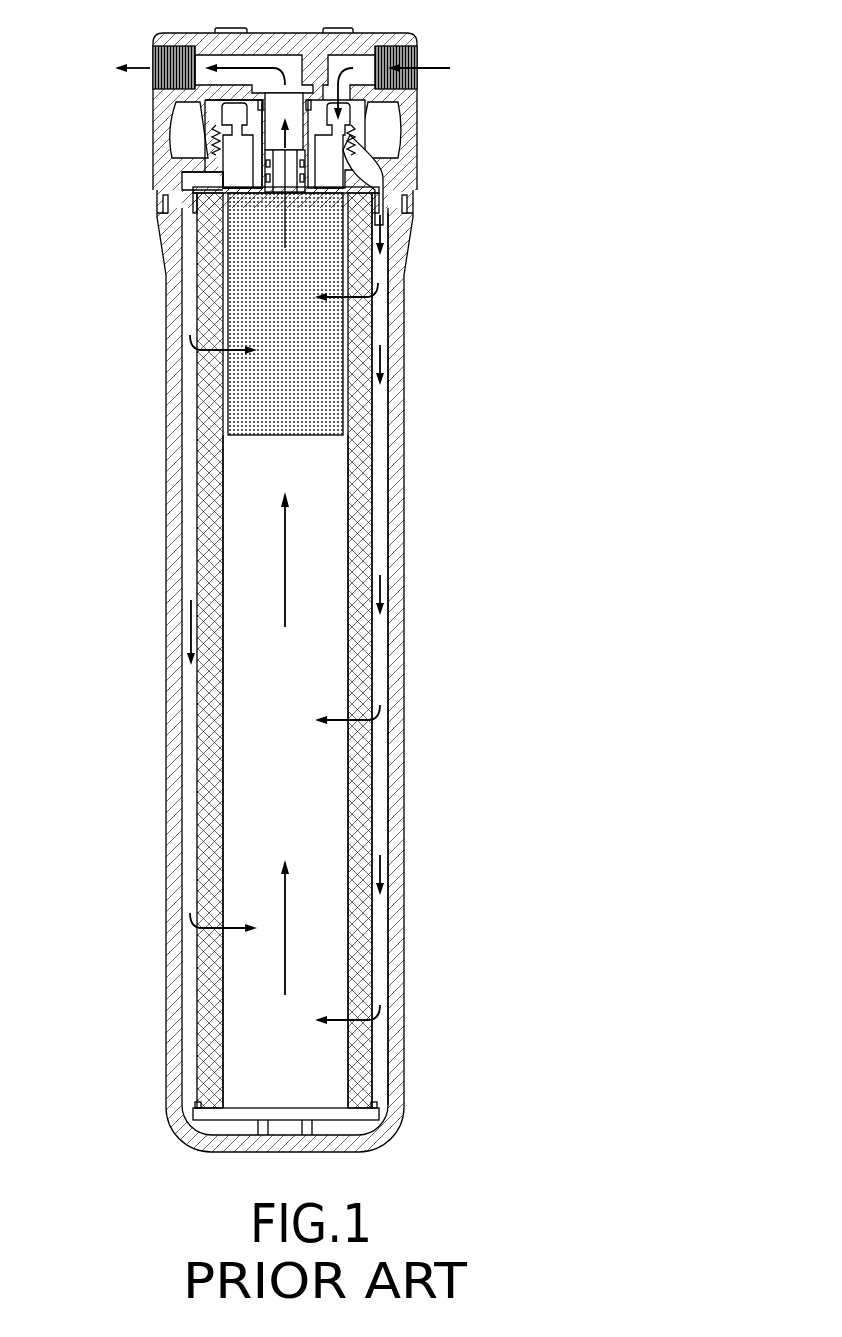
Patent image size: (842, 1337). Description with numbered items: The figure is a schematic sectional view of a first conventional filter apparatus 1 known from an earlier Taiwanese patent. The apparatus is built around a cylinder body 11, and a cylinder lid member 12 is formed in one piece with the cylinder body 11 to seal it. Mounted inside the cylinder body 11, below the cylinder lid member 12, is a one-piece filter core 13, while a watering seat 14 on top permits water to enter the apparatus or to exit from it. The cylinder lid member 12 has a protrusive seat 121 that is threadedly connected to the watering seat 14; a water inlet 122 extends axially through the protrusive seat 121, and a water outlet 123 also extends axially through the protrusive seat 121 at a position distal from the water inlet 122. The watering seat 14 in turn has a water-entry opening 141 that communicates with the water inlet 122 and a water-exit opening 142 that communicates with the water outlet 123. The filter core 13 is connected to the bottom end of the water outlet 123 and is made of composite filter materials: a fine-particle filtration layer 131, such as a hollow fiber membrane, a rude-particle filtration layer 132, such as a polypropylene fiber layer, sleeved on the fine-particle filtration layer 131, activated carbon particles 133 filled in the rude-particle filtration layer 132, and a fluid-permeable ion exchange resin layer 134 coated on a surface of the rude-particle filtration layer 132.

The first conventional filter apparatus 1 is at (415, 372).
The cylinder body 11 is at (405, 530).
The cylinder lid member 12 is at (181, 155).
The protrusive seat 121 is at (213, 136).
The water inlet 122 is at (358, 124).
The water outlet 123 is at (278, 105).
The filter core 13 is at (382, 650).
The fine-particle filtration layer 131 is at (232, 283).
The rude-particle filtration layer 132 is at (382, 475).
The activated carbon particles 133 is at (340, 752).
The ion exchange resin layer 134 is at (372, 437).
The watering seat 14 is at (400, 22).
The water-entry opening 141 is at (415, 57).
The water-exit opening 142 is at (155, 58).